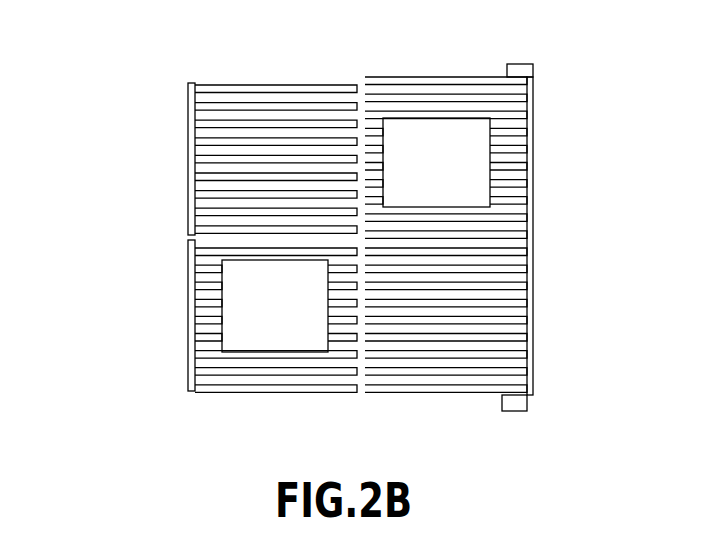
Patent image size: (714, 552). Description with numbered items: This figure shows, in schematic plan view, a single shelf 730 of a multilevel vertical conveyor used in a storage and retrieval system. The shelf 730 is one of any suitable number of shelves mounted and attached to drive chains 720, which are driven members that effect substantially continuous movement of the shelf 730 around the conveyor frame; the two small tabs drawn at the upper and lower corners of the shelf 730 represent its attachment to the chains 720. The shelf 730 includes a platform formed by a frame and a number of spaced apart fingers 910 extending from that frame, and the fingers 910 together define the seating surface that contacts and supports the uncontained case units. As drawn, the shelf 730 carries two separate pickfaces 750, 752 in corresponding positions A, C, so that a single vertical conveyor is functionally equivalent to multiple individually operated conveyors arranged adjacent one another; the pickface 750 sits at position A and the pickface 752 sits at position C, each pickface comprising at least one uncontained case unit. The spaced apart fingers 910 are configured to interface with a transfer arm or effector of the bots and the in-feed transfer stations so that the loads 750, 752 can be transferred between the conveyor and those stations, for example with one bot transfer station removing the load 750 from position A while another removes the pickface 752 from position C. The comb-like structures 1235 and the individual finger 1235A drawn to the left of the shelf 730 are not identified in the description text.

The comb electrode 1235 is at (218, 237).
The comb finger 1235A is at (298, 103).
The fingers 910 is at (382, 97).
The position C is at (425, 107).
The chains 720 is at (520, 63).
The pickface 752 is at (453, 168).
The pickface 750 is at (268, 341).
The position A is at (410, 360).
The shelf 730 is at (476, 261).